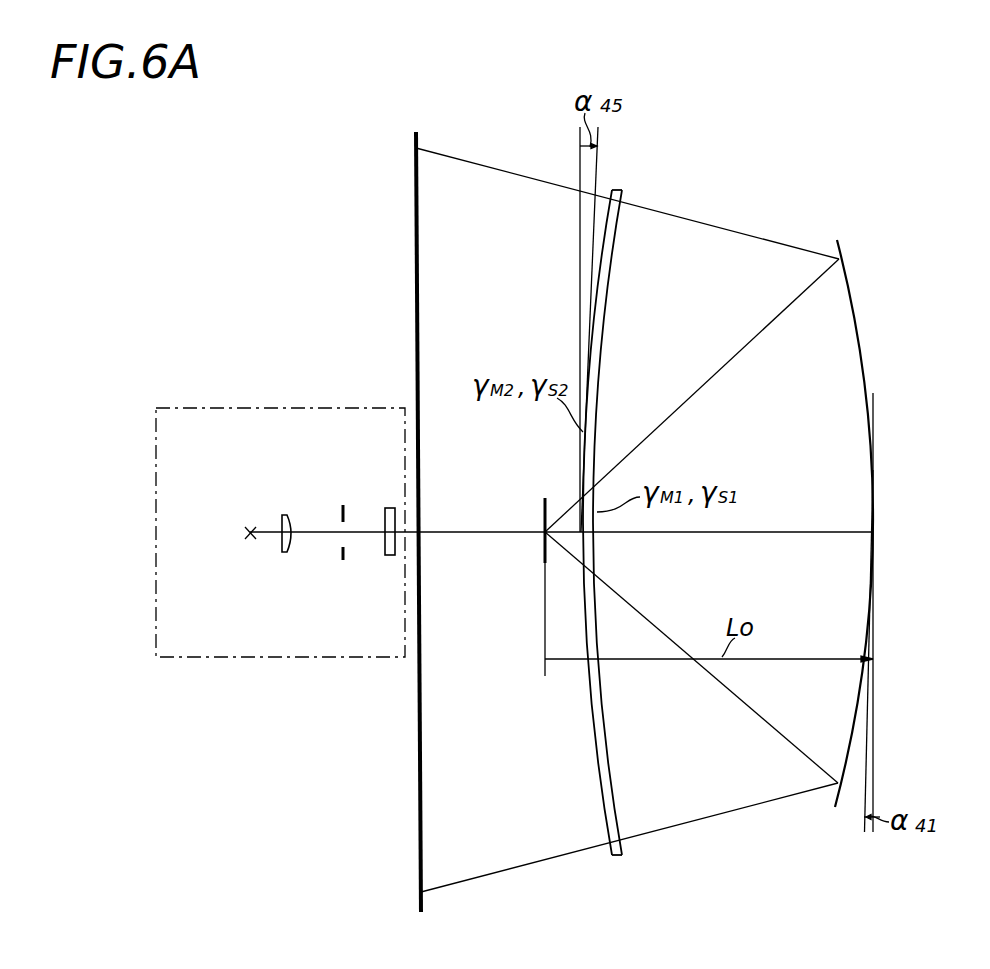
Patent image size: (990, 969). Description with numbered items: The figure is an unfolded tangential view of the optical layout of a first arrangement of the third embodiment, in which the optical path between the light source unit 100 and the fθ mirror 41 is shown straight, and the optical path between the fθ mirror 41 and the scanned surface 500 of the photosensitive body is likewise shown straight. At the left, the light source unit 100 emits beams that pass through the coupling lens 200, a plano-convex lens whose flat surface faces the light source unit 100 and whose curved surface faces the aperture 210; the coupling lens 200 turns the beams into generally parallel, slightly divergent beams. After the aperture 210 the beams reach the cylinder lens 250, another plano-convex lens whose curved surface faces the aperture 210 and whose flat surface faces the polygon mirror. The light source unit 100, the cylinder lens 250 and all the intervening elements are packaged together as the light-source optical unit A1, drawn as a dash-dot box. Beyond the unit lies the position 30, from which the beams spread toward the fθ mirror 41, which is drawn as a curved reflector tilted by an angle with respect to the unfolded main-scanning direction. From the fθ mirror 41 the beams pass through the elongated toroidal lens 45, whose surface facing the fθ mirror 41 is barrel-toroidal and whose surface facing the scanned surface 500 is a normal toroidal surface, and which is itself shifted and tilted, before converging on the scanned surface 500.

The scanned surface 500 is at (415, 182).
The elongated toroidal lens 45 is at (613, 226).
The fθ mirror 41 is at (858, 322).
The intermediate image / light source point 30 is at (541, 510).
The light-source optical unit A1 is at (240, 407).
The light source unit 100 is at (250, 538).
The coupling lens 200 is at (286, 513).
The aperture 210 is at (343, 562).
The cylinder lens 250 is at (389, 506).